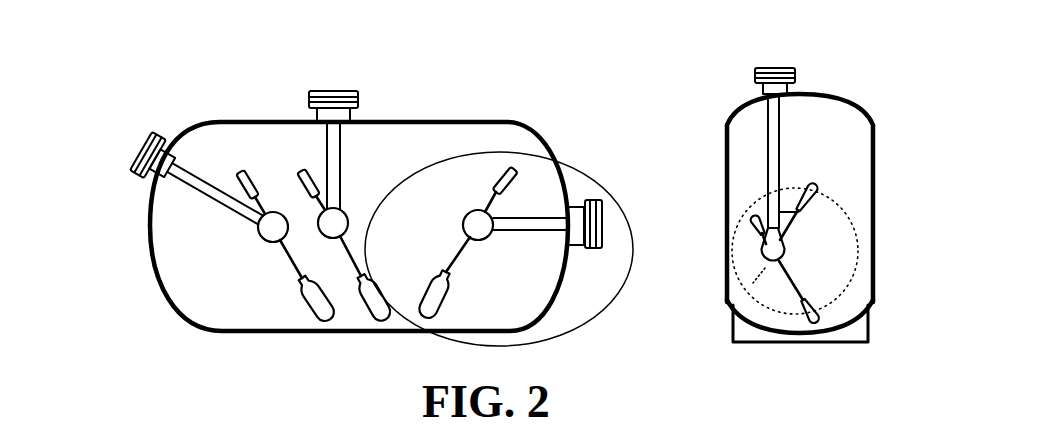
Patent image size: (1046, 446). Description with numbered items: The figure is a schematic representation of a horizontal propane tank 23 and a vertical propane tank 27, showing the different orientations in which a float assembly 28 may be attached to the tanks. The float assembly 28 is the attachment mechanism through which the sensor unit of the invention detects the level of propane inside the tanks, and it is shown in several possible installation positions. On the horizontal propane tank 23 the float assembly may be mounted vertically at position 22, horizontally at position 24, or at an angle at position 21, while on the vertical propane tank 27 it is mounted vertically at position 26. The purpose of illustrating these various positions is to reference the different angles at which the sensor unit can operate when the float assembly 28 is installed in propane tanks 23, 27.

The angled float assembly position 21 is at (127, 153).
The vertical float assembly position 22 is at (331, 85).
The horizontal propane tank 23 is at (510, 108).
The horizontal float assembly position 24 is at (600, 220).
The vertical float assembly position 26 is at (779, 60).
The vertical propane tank 27 is at (839, 89).
The float assembly 28 is at (621, 294).